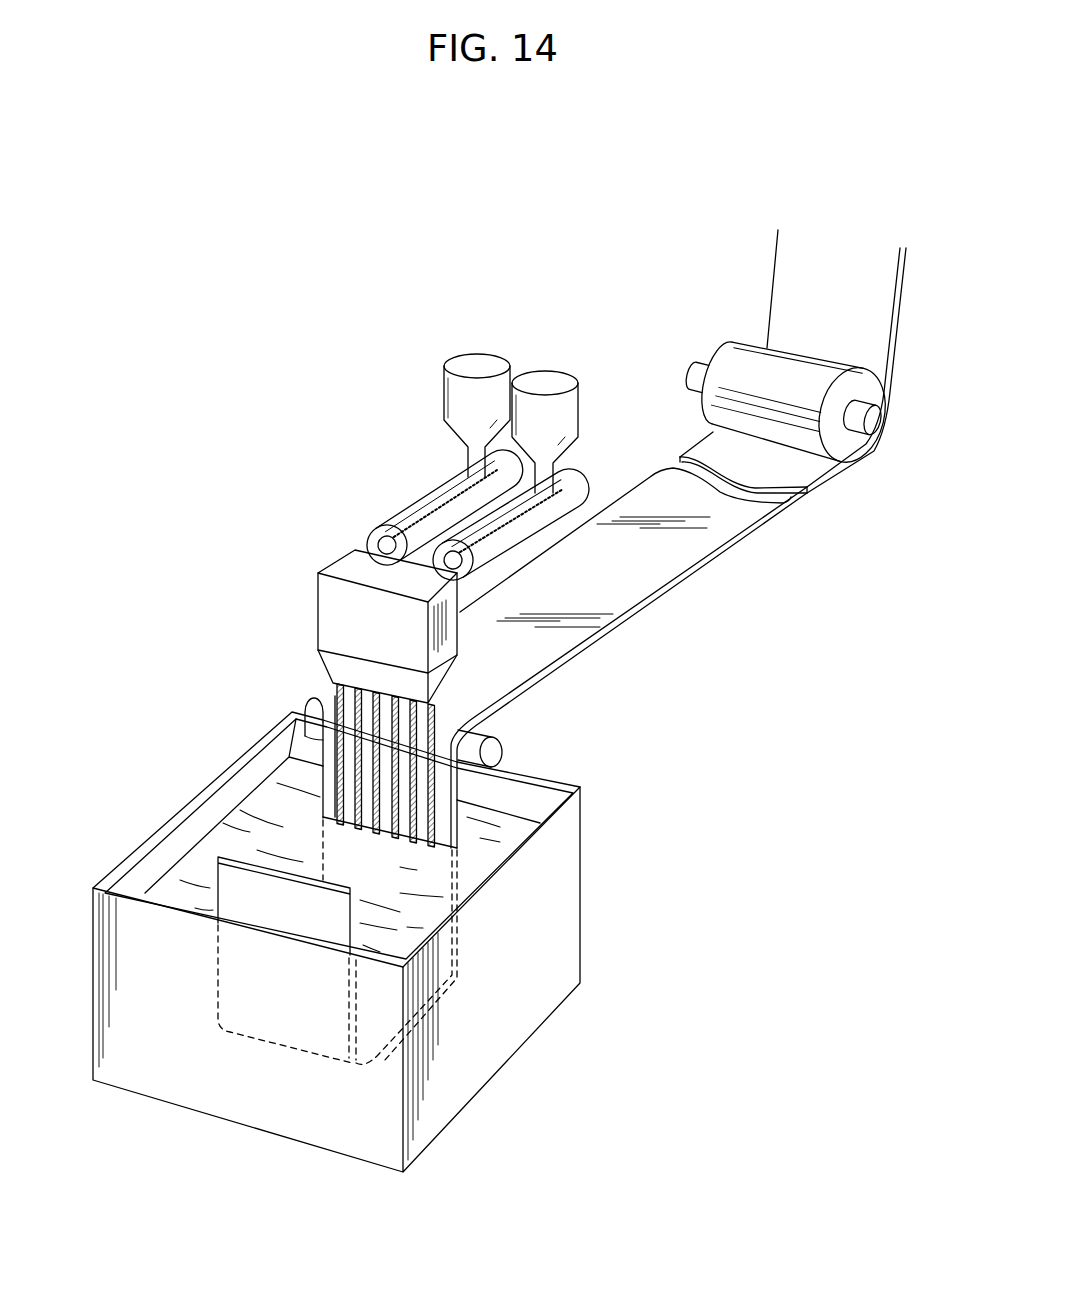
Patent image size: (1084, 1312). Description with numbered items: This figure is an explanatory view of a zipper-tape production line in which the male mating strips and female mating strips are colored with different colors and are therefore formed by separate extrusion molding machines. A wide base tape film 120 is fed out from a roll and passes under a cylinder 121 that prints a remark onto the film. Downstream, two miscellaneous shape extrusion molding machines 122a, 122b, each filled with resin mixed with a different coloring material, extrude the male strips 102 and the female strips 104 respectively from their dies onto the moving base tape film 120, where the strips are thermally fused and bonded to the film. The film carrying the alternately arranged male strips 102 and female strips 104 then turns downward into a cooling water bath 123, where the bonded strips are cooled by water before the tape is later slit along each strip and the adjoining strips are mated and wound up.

The male strips 102 is at (337, 692).
The female strips 104 is at (302, 716).
The base tape film 120 is at (684, 578).
The cylinder 121 is at (847, 447).
The extrusion molding machine 122a is at (440, 391).
The extrusion molding machine 122b is at (577, 397).
The cooling water bath 123 is at (557, 903).